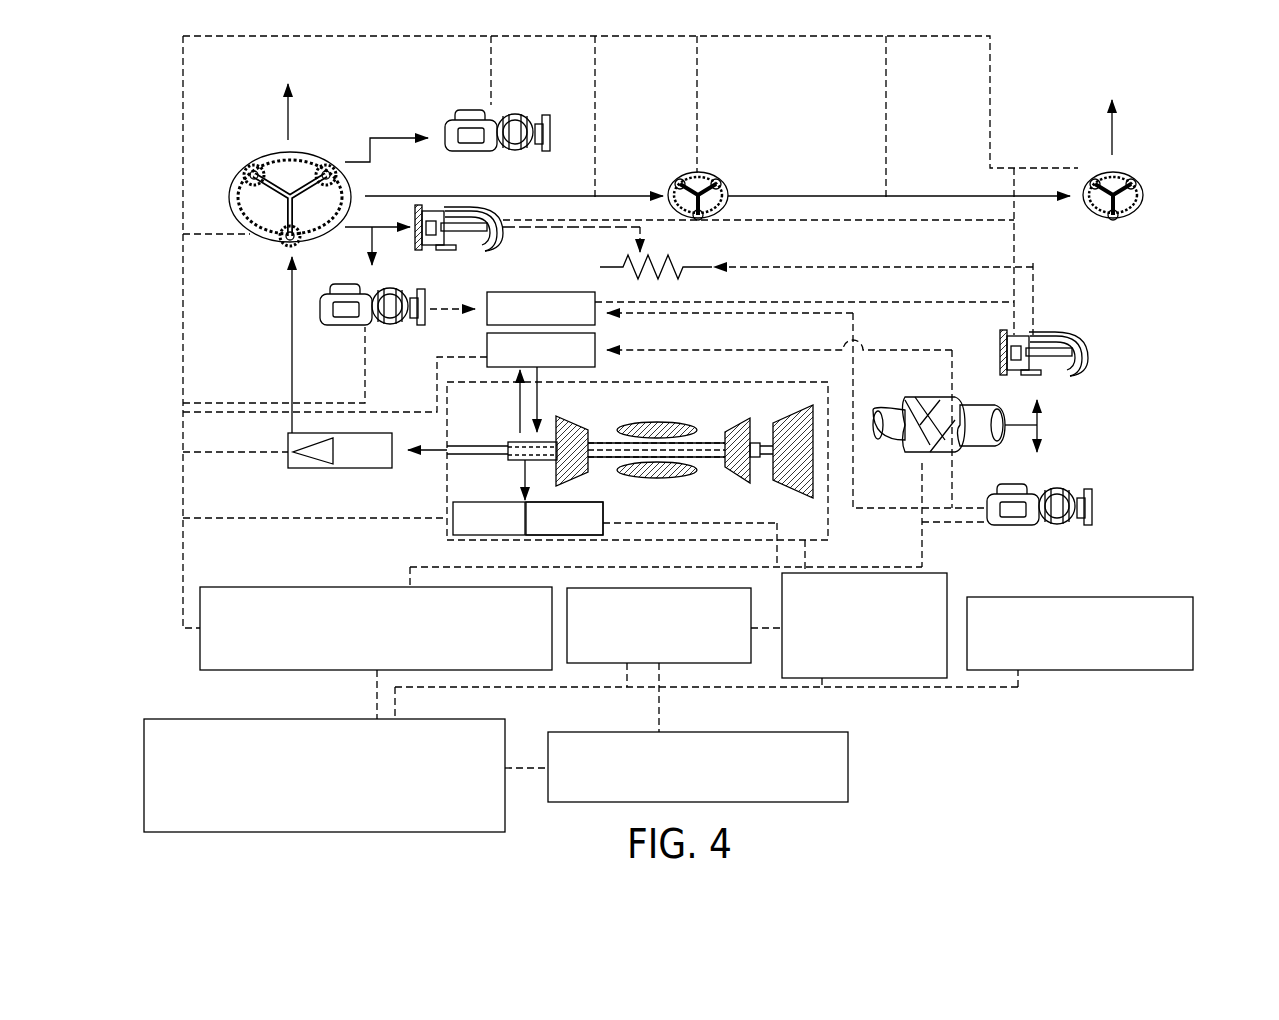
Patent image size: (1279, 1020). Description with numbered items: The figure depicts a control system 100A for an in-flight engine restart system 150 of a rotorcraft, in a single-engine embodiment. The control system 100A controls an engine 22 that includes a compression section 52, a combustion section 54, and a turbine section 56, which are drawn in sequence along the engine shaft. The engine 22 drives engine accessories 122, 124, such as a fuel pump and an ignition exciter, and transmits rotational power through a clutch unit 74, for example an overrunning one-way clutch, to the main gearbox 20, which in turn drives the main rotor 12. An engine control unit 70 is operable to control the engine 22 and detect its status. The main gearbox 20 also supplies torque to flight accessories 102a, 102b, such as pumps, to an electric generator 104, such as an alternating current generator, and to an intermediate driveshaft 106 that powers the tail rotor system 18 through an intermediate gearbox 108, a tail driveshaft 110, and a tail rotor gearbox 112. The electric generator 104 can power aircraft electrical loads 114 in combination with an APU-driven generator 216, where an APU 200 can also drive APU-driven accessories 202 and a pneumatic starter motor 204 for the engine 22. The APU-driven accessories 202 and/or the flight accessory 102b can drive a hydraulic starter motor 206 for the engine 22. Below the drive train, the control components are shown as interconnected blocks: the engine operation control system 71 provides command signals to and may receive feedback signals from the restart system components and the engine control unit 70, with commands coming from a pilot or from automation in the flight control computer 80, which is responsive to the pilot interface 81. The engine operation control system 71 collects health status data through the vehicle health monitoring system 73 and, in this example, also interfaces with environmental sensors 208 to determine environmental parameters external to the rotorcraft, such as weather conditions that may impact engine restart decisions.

The main rotor 12 is at (292, 115).
The tail rotor system 18 is at (1113, 140).
The main gearbox 20 is at (252, 160).
The engine 22 is at (828, 517).
The compression section 52 is at (573, 418).
The combustion section 54 is at (632, 422).
The turbine section 56 is at (808, 403).
The engine control unit 70 is at (890, 678).
The engine operation control system 71 is at (143, 775).
The vehicle health monitoring system 73 is at (200, 648).
The clutch unit 74 is at (357, 468).
The flight control computer 80 is at (715, 663).
The pilot interface 81 is at (848, 770).
The control system 100A is at (1098, 280).
The flight accessory 102a is at (470, 115).
The flight accessory 102b is at (342, 325).
The electric generator 104 is at (460, 247).
The intermediate driveshaft 106 is at (495, 196).
The intermediate gearbox 108 is at (700, 173).
The tail driveshaft 110 is at (900, 195).
The tail rotor gearbox 112 is at (1142, 207).
The aircraft electrical loads 114 is at (660, 257).
The engine accessory 122 is at (500, 518).
The engine accessory 124 is at (543, 508).
The in-flight engine restart system 150 is at (296, 492).
The APU 200 is at (923, 453).
The APU-driven accessories 202 is at (1092, 503).
The pneumatic starter motor 204 is at (545, 290).
The hydraulic starter motor 206 is at (487, 348).
The environmental sensors 208 is at (1152, 670).
The APU-driven generator 216 is at (1087, 367).